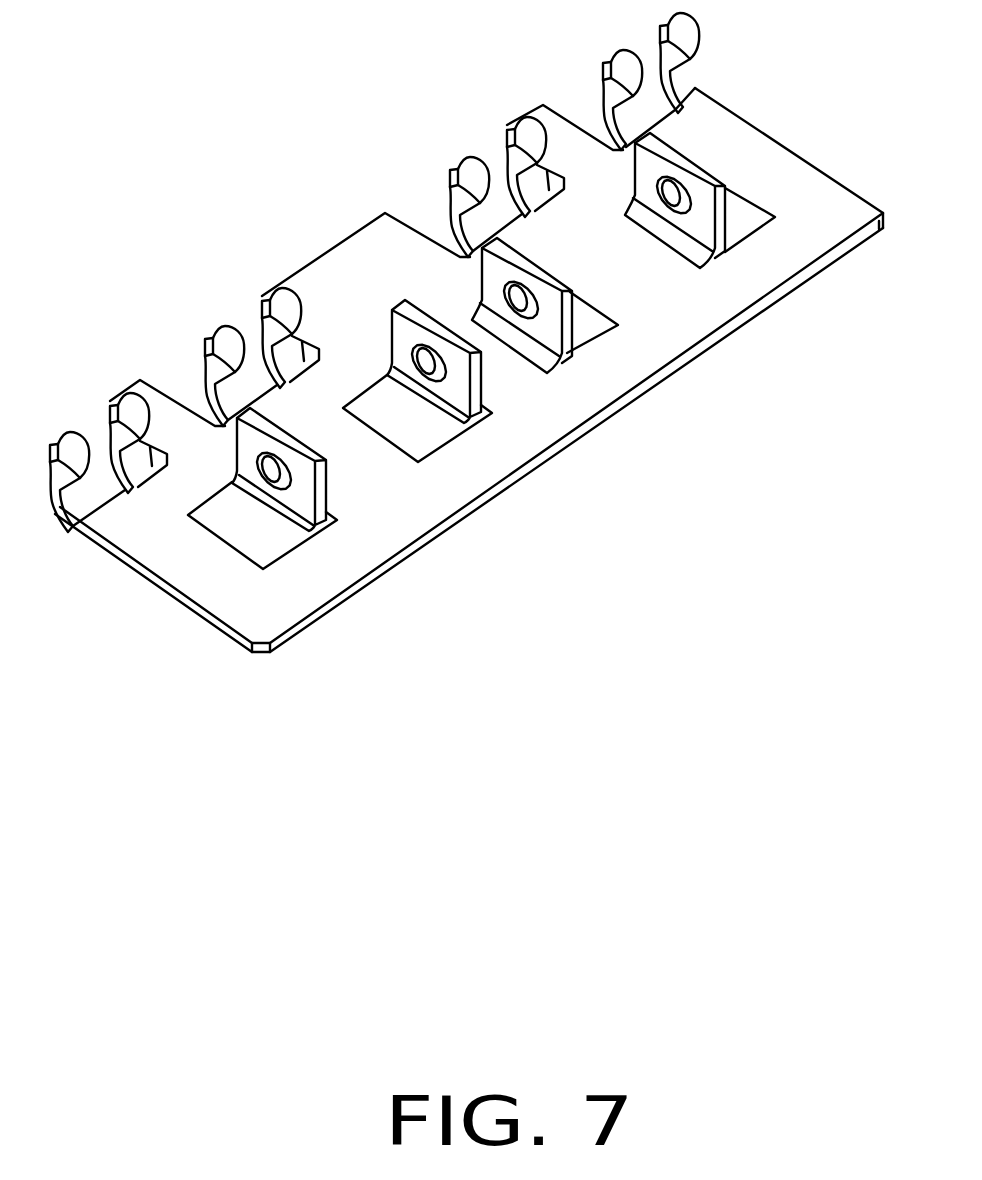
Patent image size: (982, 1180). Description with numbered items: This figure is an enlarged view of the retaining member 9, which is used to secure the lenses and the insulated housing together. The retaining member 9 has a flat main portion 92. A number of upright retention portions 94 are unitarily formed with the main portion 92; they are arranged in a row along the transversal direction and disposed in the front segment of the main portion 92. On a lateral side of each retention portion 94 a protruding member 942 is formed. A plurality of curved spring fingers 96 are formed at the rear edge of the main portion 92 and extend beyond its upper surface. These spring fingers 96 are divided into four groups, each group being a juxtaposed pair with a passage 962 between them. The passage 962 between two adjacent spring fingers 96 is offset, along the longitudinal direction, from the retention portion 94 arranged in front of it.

The retaining member 9 is at (267, 207).
The main portion 92 is at (653, 345).
The retention portion 94 is at (470, 387).
The protruding member 942 is at (427, 367).
The spring finger 96 is at (527, 132).
The passage 962 is at (500, 208).